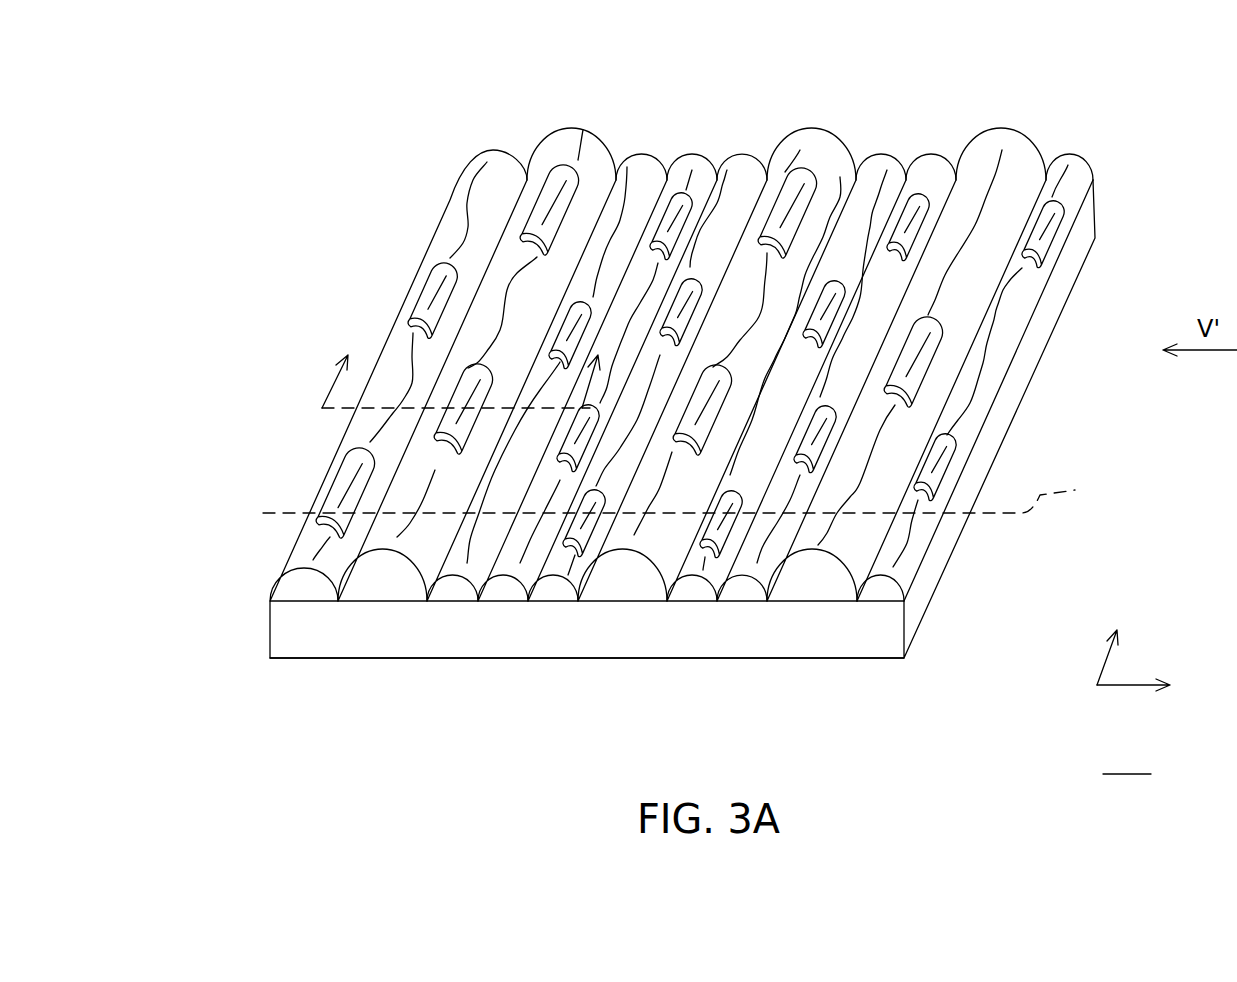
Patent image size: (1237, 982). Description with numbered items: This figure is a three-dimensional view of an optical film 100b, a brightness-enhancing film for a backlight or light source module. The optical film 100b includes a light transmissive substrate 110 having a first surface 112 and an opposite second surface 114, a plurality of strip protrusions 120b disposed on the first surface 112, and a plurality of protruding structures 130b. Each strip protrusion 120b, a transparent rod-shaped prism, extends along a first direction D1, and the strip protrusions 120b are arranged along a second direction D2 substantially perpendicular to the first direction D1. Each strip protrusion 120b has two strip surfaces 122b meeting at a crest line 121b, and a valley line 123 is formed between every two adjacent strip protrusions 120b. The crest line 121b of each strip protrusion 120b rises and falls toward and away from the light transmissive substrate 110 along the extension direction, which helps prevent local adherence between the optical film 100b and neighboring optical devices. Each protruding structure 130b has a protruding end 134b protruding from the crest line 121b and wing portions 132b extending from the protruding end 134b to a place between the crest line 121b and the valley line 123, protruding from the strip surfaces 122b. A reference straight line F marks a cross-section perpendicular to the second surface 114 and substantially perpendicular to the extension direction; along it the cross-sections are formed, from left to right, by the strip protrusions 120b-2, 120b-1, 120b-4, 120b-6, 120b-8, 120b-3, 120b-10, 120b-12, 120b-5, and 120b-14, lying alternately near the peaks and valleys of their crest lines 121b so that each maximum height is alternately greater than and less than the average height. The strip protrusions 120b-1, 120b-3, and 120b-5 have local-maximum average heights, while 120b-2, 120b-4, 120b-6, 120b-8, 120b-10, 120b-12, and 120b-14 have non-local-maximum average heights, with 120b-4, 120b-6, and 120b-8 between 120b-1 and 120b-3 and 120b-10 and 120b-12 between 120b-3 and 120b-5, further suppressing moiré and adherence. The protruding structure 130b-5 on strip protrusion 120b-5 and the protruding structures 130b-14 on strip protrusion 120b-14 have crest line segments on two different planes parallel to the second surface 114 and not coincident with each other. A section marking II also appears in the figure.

The optical film 100b is at (1127, 760).
The light transmissive substrate 110 is at (890, 633).
The first surface 112 is at (886, 586).
The second surface 114 is at (856, 675).
The strip protrusions 120b is at (995, 352).
The strip protrusion 120b-1 is at (377, 595).
The strip protrusion 120b-2 is at (295, 592).
The strip protrusion 120b-3 is at (628, 578).
The strip protrusion 120b-4 is at (453, 595).
The strip protrusion 120b-5 is at (817, 588).
The strip protrusion 120b-6 is at (502, 595).
The strip protrusion 120b-8 is at (550, 595).
The strip protrusion 120b-10 is at (692, 592).
The strip protrusion 120b-12 is at (737, 595).
The strip protrusion 120b-14 is at (867, 597).
The crest line 121b is at (917, 533).
The strip surfaces 122b is at (754, 183).
The valley line 123 is at (1007, 275).
The protruding structures 130b is at (905, 80).
The protruding structure 130b-5 is at (925, 360).
The protruding structures 130b-14 is at (1056, 217).
The wing portions 132b is at (776, 182).
The protruding end 134b is at (800, 173).
The reference straight line F is at (678, 495).
The section line II is at (468, 365).
The first direction D1 is at (1116, 637).
The second direction D2 is at (1151, 685).